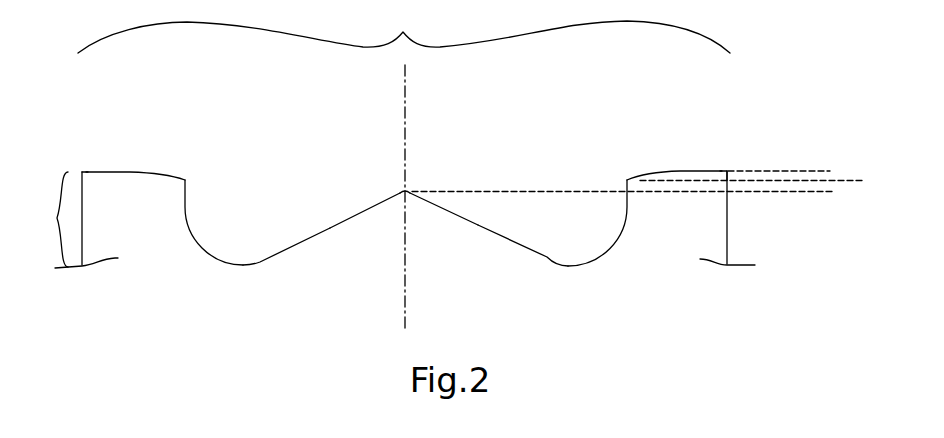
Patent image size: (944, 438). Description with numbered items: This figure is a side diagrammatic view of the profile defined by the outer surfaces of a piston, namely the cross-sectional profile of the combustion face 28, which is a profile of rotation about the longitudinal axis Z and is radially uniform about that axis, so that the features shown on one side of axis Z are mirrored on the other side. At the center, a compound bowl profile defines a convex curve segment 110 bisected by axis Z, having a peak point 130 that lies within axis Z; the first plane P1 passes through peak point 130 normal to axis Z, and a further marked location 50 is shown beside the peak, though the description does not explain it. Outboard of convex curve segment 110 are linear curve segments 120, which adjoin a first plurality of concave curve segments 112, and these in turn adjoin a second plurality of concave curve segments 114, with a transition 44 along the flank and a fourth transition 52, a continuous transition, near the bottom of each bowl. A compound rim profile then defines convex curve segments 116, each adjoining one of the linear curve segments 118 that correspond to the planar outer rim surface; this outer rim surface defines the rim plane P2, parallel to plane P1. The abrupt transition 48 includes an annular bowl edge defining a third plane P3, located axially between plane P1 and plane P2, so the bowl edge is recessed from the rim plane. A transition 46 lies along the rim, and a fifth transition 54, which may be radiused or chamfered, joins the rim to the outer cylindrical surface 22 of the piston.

The combustion face 28 is at (404, 31).
The outer cylindrical surface 22 is at (72, 220).
The fifth transition 54 is at (82, 170).
The linear curve segments 118 is at (101, 169).
The transition 46 is at (122, 171).
The convex curve segments 116 is at (155, 170).
The abrupt transition 48 is at (185, 179).
The second plurality of concave curve segments 114 is at (201, 243).
The fourth transition 52 is at (244, 264).
The first plurality of concave curve segments 112 is at (266, 257).
The transition 44 is at (310, 236).
The linear curve segments 120 is at (339, 219).
The peak-side position 50 is at (382, 201).
The convex curve segment 110 is at (419, 188).
The peak point 130 is at (404, 192).
The longitudinal axis Z is at (403, 289).
The first plane P1 is at (800, 194).
The rim plane P2 is at (798, 169).
The third plane P3 is at (856, 179).